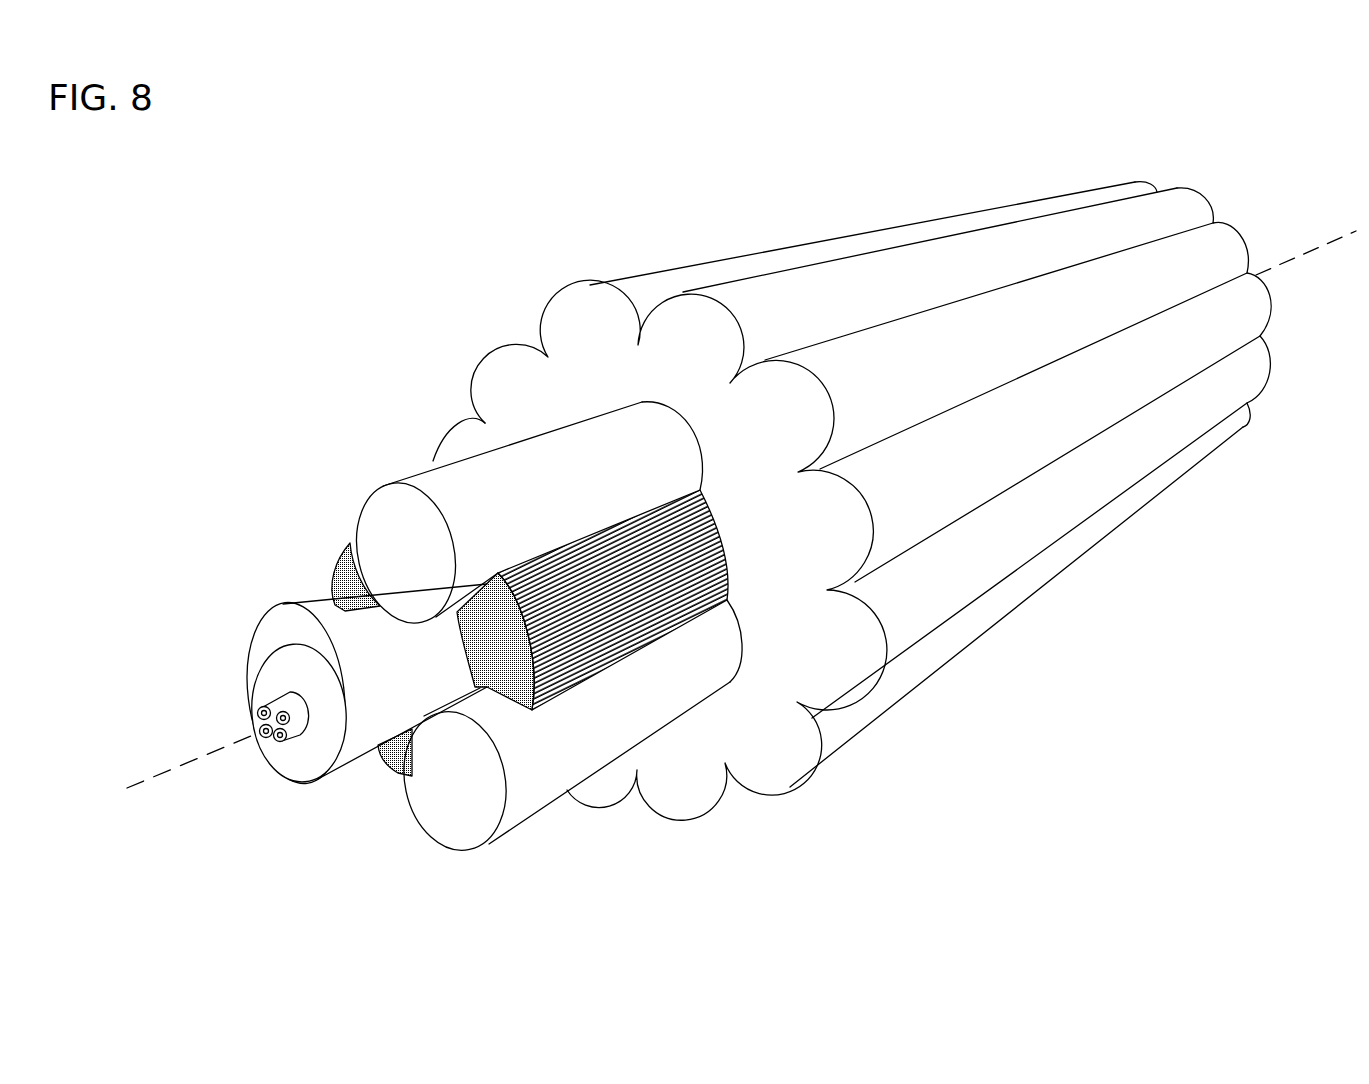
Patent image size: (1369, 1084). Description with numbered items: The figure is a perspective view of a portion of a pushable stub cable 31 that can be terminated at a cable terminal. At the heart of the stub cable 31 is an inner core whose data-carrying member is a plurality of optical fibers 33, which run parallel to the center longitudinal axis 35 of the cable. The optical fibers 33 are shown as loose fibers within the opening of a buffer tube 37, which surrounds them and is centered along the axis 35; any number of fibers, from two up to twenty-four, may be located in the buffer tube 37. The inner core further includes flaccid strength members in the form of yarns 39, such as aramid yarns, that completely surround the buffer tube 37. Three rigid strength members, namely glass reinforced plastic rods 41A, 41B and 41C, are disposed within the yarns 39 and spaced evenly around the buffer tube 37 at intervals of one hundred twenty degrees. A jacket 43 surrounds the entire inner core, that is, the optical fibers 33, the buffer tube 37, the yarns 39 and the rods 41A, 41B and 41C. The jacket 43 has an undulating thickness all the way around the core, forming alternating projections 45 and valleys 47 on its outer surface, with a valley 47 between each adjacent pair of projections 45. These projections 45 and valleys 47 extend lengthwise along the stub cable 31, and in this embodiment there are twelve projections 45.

The stub cable 31 is at (712, 231).
The optical fibers 33 is at (270, 707).
The center/longitudinal axis 35 is at (160, 779).
The buffer tube 37 is at (355, 719).
The yarns 39 is at (345, 586).
The rigid strength member 41A is at (277, 633).
The rigid strength member 41B is at (449, 487).
The rigid strength member 41C is at (543, 777).
The jacket 43 is at (502, 371).
The projections 45 is at (1186, 188).
The valleys 47 is at (1212, 223).